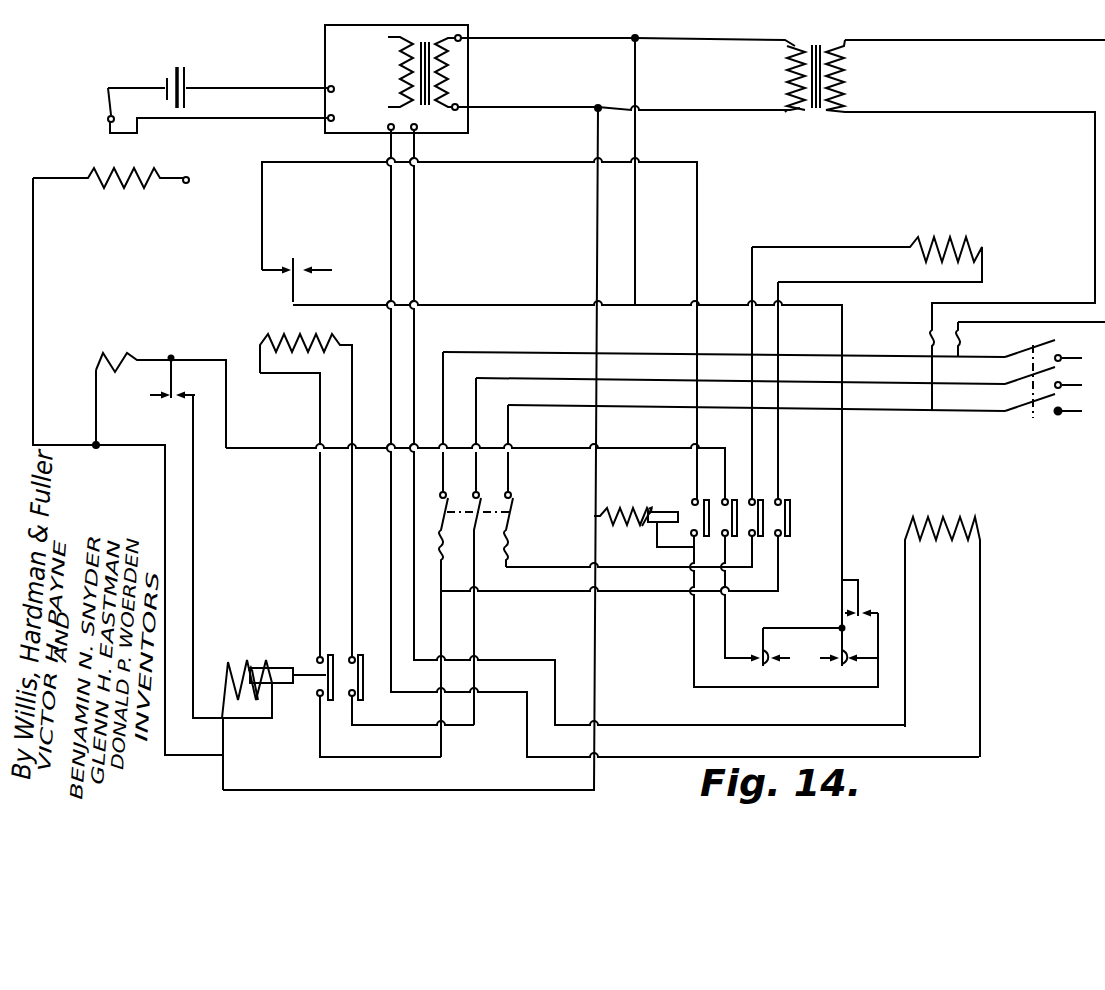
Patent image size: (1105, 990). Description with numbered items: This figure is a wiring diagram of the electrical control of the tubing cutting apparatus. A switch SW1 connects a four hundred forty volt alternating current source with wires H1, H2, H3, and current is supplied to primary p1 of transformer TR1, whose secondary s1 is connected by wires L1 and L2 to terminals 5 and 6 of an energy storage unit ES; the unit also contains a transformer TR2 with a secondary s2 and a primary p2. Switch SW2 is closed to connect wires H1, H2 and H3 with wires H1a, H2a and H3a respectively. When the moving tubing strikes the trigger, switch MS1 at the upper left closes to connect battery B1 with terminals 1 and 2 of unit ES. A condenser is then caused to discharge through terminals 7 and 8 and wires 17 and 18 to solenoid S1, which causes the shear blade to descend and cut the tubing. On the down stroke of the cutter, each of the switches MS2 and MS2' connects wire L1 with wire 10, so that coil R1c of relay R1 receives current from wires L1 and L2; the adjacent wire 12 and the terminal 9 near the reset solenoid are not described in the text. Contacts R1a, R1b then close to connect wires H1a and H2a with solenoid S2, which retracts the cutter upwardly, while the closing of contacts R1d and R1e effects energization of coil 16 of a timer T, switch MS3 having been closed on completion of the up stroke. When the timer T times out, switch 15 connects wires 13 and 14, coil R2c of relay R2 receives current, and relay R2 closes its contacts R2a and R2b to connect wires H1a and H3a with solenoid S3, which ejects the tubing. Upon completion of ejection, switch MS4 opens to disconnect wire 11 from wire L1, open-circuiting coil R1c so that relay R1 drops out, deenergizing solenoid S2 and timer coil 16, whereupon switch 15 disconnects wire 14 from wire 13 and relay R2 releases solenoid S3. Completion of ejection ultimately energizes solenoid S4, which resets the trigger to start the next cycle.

The energy storage unit ES is at (508, 52).
The battery B1 is at (184, 68).
The switch MS1 is at (107, 101).
The terminal 1 is at (338, 91).
The terminal 2 is at (338, 120).
The transformer TR2 is at (435, 58).
The secondary s2 is at (390, 72).
The primary p2 is at (440, 72).
The terminal 5 is at (462, 36).
The terminal 6 is at (454, 116).
The terminal 7 is at (385, 123).
The terminal 8 is at (420, 123).
The wire L1 is at (826, 627).
The wire L2 is at (608, 111).
The transformer TR1 is at (817, 43).
The secondary s1 is at (784, 96).
The primary p1 is at (846, 96).
The wire H1 is at (971, 43).
The wire H2 is at (971, 113).
The wire H3 is at (884, 382).
The solenoid S4 is at (150, 168).
The terminal 9 is at (190, 181).
The wire 11 is at (297, 161).
The wire 17 is at (390, 230).
The wire 18 is at (414, 230).
The switch MS4 is at (297, 272).
The solenoid S2 is at (910, 245).
The timer T is at (160, 390).
The coil 16 is at (96, 368).
The switch 15 is at (176, 378).
The wire 14 is at (204, 520).
The wire 13 is at (282, 449).
The solenoid S3 is at (329, 368).
The switch SW2 is at (494, 624).
The relay R1 is at (636, 498).
The coil R1c is at (636, 540).
The contact R1e is at (714, 494).
The contact R1d is at (736, 498).
The contact R1b is at (772, 501).
The contact R1a is at (792, 516).
The wire 10 is at (694, 568).
The conductor 12 is at (725, 628).
The wire H1a is at (776, 570).
The wire H2a is at (609, 566).
The wire H3a is at (352, 708).
The switch MS3 is at (766, 658).
The switch MS2 is at (849, 658).
The switch MS2' is at (864, 591).
The solenoid S1 is at (958, 540).
The switch SW1 is at (1043, 400).
The relay R2 is at (232, 712).
The coil R2c is at (230, 712).
The contact R2b is at (338, 650).
The contact R2a is at (368, 650).